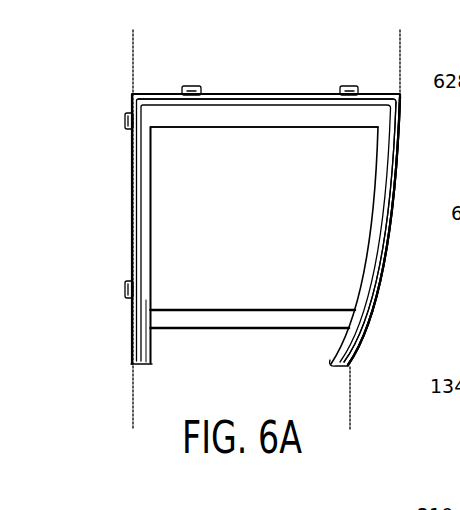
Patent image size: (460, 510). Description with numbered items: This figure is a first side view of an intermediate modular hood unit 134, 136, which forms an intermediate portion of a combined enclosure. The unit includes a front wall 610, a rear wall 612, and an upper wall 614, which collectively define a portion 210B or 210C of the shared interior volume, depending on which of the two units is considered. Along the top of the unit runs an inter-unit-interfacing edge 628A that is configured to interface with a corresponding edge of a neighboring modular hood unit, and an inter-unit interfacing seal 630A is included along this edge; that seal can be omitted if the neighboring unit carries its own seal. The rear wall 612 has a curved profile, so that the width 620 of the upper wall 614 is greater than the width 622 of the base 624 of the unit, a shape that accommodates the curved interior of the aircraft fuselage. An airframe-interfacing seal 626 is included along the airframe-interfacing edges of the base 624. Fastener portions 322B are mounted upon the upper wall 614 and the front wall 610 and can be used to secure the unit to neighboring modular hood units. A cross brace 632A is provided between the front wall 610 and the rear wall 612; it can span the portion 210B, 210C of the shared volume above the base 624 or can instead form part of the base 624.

The front wall 610 is at (131, 211).
The rear wall 612 is at (386, 235).
The upper wall 614 is at (291, 94).
The width of upper wall 620 is at (400, 62).
The width of base 622 is at (350, 396).
The base 624 is at (149, 366).
The airframe-interfacing seal 626 is at (136, 363).
The inter-unit-interfacing edge 628A is at (155, 123).
The inter-unit interfacing seal 630A is at (385, 157).
The cross brace 632A is at (242, 317).
The fastener portion 322B is at (190, 86).
The portion of shared interior volume 210B is at (188, 292).
The portion of shared interior volume 210C is at (188, 340).
The intermediate modular hood unit 134 is at (380, 292).
The intermediate modular hood unit 136 is at (380, 292).